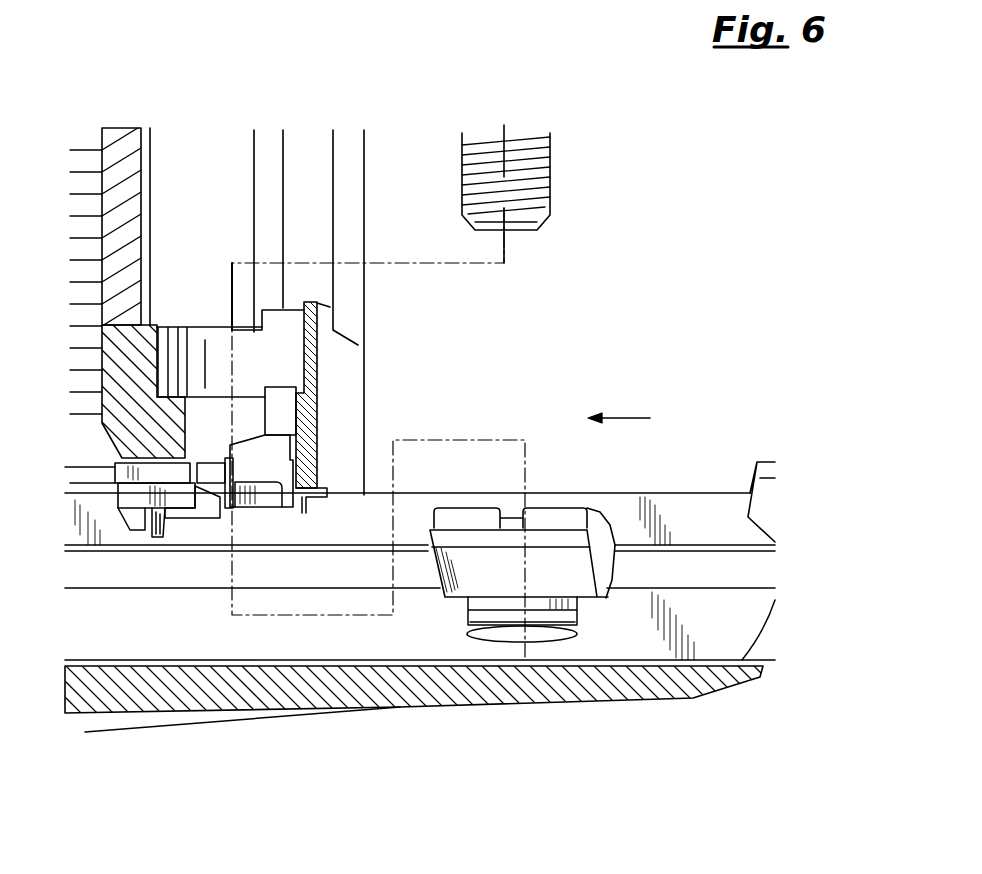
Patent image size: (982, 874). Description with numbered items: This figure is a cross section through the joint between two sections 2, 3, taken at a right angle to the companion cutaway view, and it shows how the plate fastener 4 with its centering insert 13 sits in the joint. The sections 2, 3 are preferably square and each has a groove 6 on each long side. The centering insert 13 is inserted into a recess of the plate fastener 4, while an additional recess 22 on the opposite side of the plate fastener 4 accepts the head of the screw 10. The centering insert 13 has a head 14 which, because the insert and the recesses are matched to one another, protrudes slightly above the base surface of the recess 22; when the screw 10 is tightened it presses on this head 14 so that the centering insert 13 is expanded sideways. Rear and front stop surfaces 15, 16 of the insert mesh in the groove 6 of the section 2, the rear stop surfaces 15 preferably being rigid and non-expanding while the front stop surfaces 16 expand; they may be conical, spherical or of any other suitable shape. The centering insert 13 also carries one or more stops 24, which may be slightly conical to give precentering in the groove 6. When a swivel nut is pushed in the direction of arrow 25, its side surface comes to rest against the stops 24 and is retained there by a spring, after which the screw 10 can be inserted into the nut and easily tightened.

The section 2 is at (762, 512).
The section 3 is at (170, 207).
The plate fastener 4 is at (350, 417).
The groove 6 is at (305, 172).
The screw 10 is at (527, 158).
The centering insert 13 is at (250, 470).
The head 14 is at (280, 407).
The rear stop surface 15 is at (172, 497).
The front stop surface 16 is at (262, 498).
The recess 22 is at (278, 348).
The stop 24 is at (138, 505).
The arrow 25 is at (619, 404).